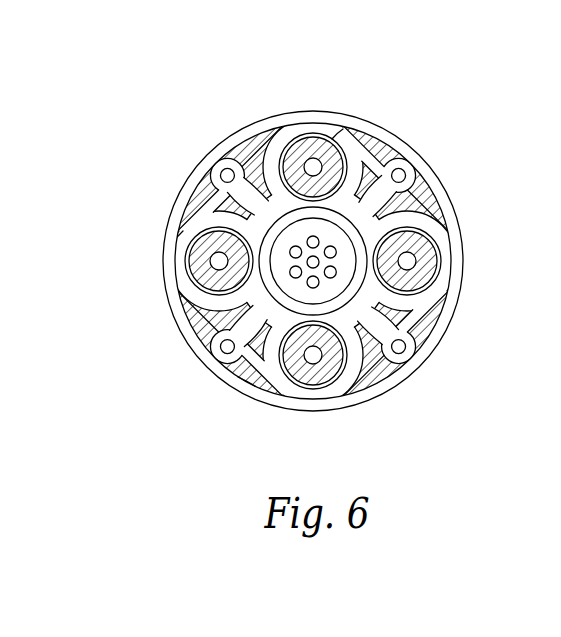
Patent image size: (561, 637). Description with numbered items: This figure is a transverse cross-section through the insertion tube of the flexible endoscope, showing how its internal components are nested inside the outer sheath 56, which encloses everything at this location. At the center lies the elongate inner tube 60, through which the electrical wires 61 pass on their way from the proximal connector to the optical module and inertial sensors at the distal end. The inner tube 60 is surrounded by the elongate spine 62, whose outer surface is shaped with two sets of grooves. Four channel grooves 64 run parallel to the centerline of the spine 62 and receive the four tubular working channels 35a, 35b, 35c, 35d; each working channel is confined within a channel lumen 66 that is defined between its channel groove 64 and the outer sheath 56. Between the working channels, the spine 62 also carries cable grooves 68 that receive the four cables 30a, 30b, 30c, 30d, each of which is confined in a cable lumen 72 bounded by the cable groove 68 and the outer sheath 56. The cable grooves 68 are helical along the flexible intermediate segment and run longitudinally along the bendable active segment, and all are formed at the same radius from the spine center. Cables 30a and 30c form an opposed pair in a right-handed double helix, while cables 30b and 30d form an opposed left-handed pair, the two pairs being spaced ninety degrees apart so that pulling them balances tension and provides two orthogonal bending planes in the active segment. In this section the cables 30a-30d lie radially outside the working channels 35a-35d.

The outer sheath 56 is at (328, 112).
The inner tube 60 is at (262, 216).
The electrical wires 61 is at (421, 212).
The spine 62 is at (200, 316).
The channel grooves 64 is at (446, 297).
The channel lumens 66 is at (340, 135).
The cable grooves 68 is at (406, 177).
The cable lumens 72 is at (226, 370).
The cable 30a is at (335, 205).
The cable 30b is at (410, 353).
The cable 30c is at (216, 362).
The cable 30d is at (217, 164).
The working channel 35a is at (302, 140).
The working channel 35b is at (438, 250).
The working channel 35c is at (323, 386).
The working channel 35d is at (188, 278).